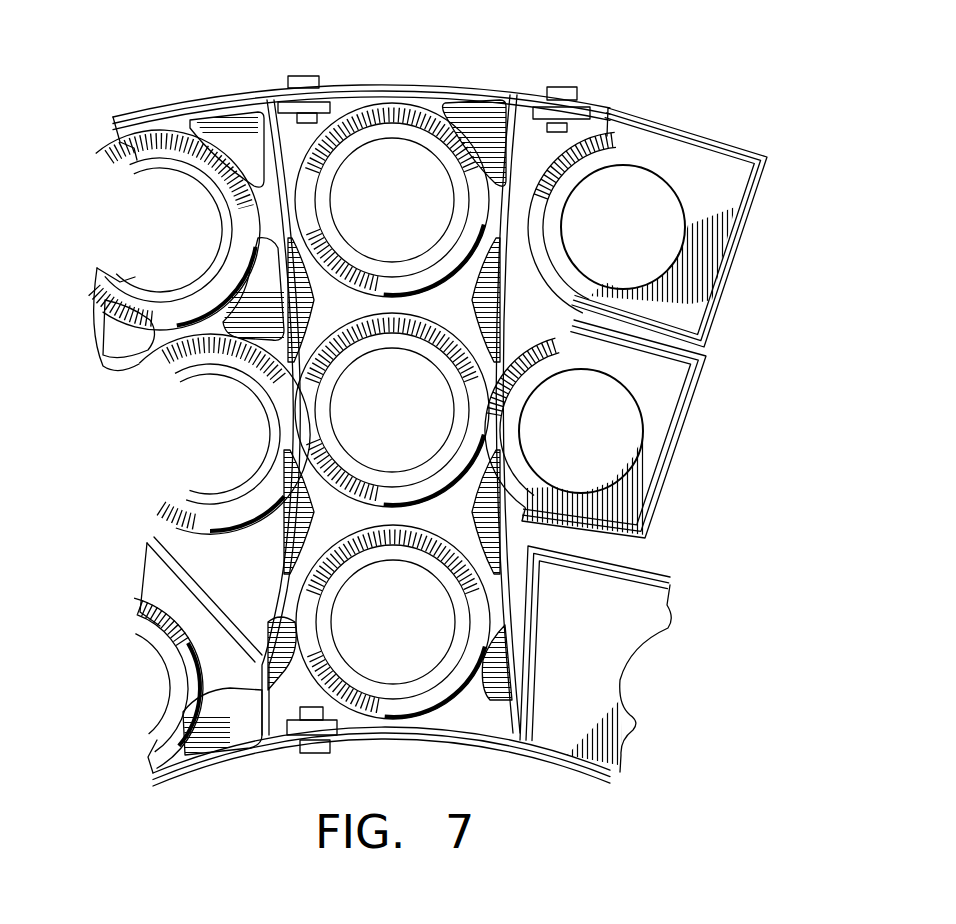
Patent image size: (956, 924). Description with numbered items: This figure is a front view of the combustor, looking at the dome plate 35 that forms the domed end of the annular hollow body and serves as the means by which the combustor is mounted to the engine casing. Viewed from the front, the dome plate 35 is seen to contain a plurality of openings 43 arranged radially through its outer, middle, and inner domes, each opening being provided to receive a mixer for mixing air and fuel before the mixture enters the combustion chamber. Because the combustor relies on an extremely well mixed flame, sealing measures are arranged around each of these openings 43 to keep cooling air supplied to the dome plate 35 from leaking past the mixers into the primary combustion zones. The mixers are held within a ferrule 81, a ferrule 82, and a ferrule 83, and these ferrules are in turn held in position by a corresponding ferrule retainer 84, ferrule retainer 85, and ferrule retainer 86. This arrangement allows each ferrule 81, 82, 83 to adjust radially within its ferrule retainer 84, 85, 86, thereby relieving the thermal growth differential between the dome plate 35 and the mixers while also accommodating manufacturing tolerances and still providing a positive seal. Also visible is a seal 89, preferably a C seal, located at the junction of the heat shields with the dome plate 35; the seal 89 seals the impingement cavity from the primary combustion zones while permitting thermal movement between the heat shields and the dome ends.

The dome plate 35 is at (491, 112).
The openings 43 is at (676, 197).
The ferrule 81 is at (392, 200).
The ferrule 82 is at (392, 410).
The ferrule 83 is at (393, 622).
The ferrule retainer 84 is at (392, 200).
The ferrule retainer 85 is at (392, 410).
The ferrule retainer 86 is at (393, 622).
The seal 89 is at (741, 262).